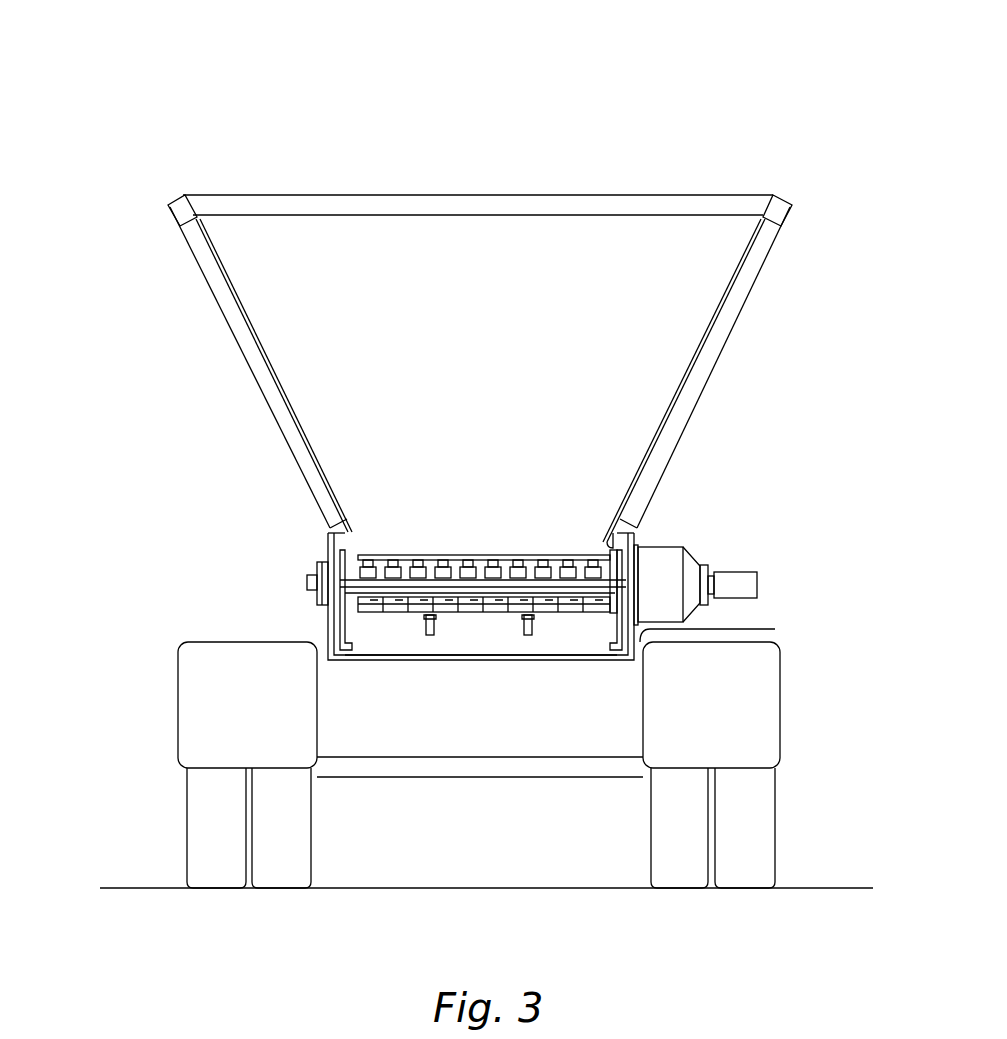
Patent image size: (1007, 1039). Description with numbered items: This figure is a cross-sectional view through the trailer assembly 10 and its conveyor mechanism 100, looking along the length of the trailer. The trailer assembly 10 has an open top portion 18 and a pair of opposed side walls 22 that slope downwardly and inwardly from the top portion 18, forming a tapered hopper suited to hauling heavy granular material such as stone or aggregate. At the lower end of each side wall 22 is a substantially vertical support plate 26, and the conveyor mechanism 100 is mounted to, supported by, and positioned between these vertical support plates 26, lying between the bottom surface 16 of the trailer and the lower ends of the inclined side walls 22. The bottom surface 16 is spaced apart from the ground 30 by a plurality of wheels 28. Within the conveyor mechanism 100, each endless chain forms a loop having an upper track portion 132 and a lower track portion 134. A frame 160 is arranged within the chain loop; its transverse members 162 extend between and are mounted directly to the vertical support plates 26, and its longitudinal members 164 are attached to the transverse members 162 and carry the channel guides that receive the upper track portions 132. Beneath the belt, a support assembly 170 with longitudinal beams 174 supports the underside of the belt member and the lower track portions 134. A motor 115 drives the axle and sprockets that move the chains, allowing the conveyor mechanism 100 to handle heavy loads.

The trailer assembly 10 is at (749, 113).
The top portion 18 is at (333, 195).
The opposed side walls 22 is at (207, 287).
The vertical support plate 26 is at (324, 546).
The wheels 28 is at (207, 822).
The ground 30 is at (835, 887).
The conveyor mechanism 100 is at (481, 526).
The motor 115 is at (648, 580).
The upper track portion 132 is at (393, 556).
The lower track portion 134 is at (563, 614).
The frame 160 is at (685, 556).
The transverse members 162 is at (354, 590).
The longitudinal members 164 is at (515, 589).
The support assembly 170 is at (393, 627).
The longitudinal beams 174 is at (430, 636).
The bottom surface 16 is at (529, 645).